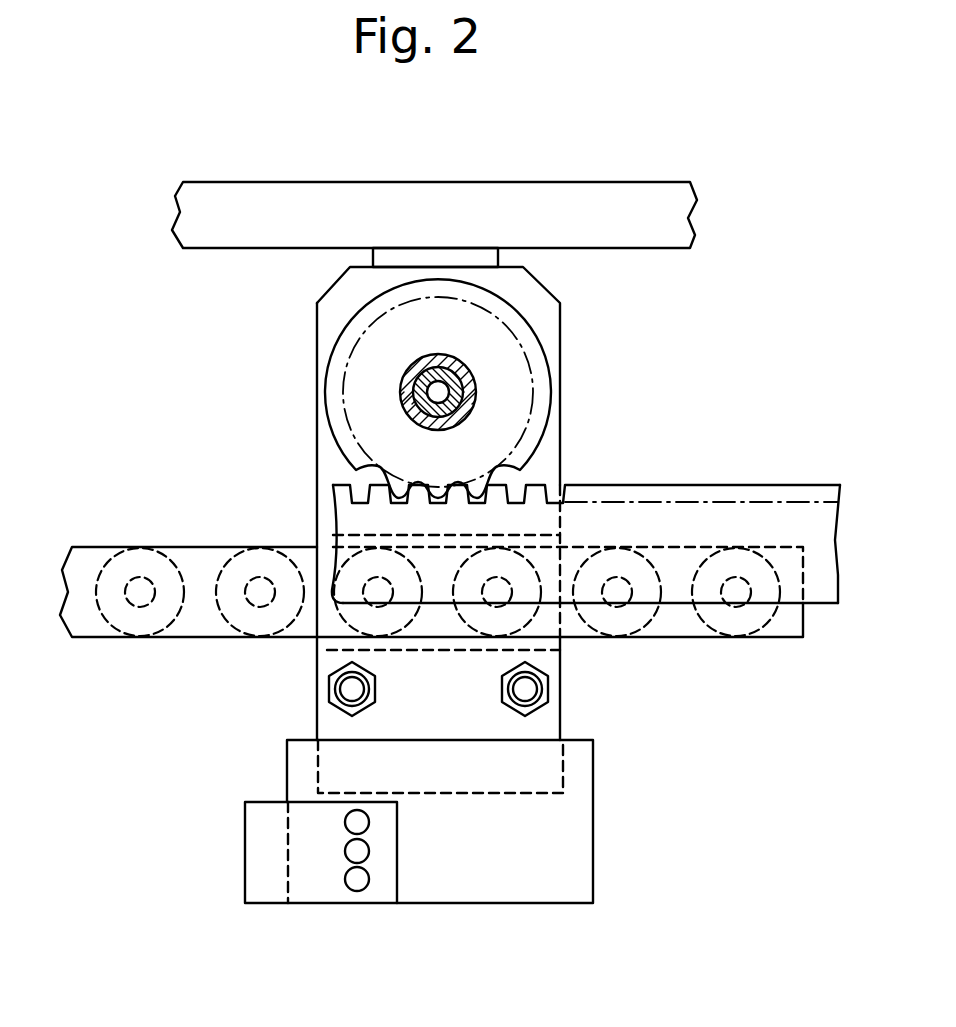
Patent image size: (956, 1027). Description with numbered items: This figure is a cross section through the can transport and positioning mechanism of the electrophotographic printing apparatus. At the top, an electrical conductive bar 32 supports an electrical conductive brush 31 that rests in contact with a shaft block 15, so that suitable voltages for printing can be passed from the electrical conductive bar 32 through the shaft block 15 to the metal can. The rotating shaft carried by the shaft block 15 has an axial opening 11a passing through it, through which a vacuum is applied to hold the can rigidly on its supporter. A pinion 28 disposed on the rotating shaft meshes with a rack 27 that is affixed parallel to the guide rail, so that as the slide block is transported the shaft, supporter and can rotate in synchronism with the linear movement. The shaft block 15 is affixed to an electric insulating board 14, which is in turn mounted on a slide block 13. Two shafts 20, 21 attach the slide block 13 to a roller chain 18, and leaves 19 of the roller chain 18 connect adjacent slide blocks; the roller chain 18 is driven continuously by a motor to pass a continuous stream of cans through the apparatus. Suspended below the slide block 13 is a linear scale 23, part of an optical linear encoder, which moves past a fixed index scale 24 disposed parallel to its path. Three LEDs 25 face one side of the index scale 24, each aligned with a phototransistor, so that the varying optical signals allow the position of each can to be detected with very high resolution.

The electrical conductive bar 32 is at (585, 192).
The electrical conductive brush 31 is at (373, 258).
The shaft block 15 is at (332, 307).
The pinion 28 is at (508, 352).
The axial opening 11a is at (447, 392).
The electric insulating board 14 is at (337, 540).
The rack 27 is at (822, 585).
The roller chain 18 is at (438, 590).
The leaves 19 is at (313, 547).
The shaft 20 is at (377, 592).
The shaft 21 is at (500, 593).
The slide block 13 is at (547, 727).
The linear scale 23 is at (580, 800).
The index scale 24 is at (262, 875).
The LEDs 25 is at (360, 884).